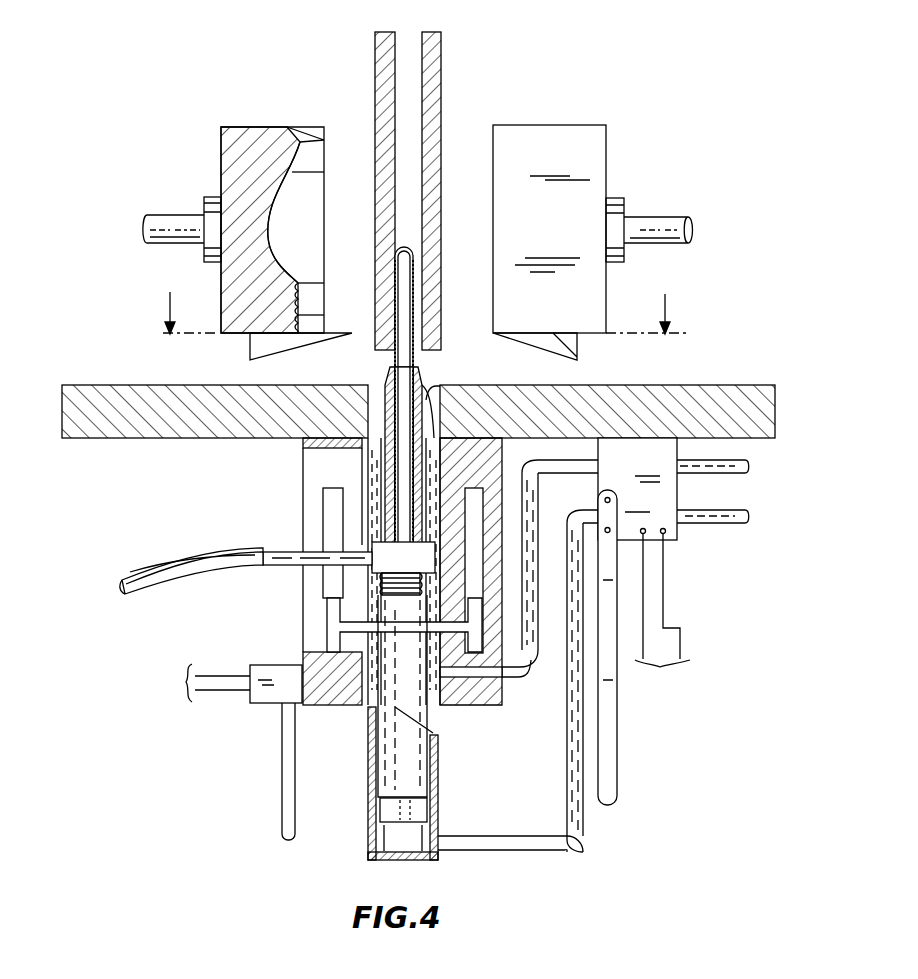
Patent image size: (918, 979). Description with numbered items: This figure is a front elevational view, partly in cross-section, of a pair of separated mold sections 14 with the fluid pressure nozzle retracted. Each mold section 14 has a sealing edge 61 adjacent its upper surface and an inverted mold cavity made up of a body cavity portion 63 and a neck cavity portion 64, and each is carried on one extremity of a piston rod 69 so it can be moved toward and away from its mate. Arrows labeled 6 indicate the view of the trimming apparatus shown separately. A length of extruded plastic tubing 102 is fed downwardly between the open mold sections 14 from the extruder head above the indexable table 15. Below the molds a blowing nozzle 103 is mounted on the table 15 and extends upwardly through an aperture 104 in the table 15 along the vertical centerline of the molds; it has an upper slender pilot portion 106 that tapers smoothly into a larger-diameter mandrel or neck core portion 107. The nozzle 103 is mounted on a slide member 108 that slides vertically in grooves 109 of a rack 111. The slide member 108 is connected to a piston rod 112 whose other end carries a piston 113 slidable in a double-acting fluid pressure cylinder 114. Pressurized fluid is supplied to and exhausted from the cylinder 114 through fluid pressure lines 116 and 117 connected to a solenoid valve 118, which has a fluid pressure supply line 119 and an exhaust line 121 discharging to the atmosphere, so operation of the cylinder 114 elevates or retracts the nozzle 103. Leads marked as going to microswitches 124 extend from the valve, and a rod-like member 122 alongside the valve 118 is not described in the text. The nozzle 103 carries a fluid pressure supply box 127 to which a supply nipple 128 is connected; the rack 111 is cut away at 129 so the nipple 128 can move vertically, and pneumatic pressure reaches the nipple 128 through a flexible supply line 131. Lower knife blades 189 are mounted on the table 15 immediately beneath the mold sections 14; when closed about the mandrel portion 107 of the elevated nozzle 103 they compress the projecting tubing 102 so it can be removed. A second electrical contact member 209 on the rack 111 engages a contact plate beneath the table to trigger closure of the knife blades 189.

The mold section 14 is at (253, 126).
The sealing edge 61 is at (322, 142).
The body cavity portion 63 is at (293, 173).
The neck cavity portion 64 is at (298, 317).
The piston rod 69 is at (170, 222).
The section line 6 is at (424, 302).
The lower knife blades 189 is at (252, 345).
The tubing of plastic material 102 is at (437, 74).
The pilot portion 106 is at (413, 297).
The blowing nozzle 103 is at (378, 368).
The mandrel or neck core portion 107 is at (425, 380).
The aperture 104 is at (441, 388).
The indexable table 15 is at (672, 388).
The cut away 129 is at (323, 450).
The rack 111 is at (310, 450).
The grooves 109 is at (325, 514).
The fluid pressure supply box 127 is at (372, 548).
The fluid pressure supply nipple 128 is at (280, 566).
The flexible supply line 131 is at (165, 565).
The slide member 108 is at (345, 626).
The piston rod 112 is at (405, 757).
The piston 113 is at (420, 814).
The double-acting fluid pressure cylinder 114 is at (368, 838).
The second electrical contact member 209 is at (295, 757).
The fluid pressure line 116 is at (497, 842).
The fluid pressure line 117 is at (505, 680).
The fluid pressure supply line 119 is at (728, 470).
The exhaust line 121 is at (724, 521).
The solenoid valve 118 is at (668, 494).
The rod 122 is at (620, 742).
The microswitches 124 is at (663, 618).